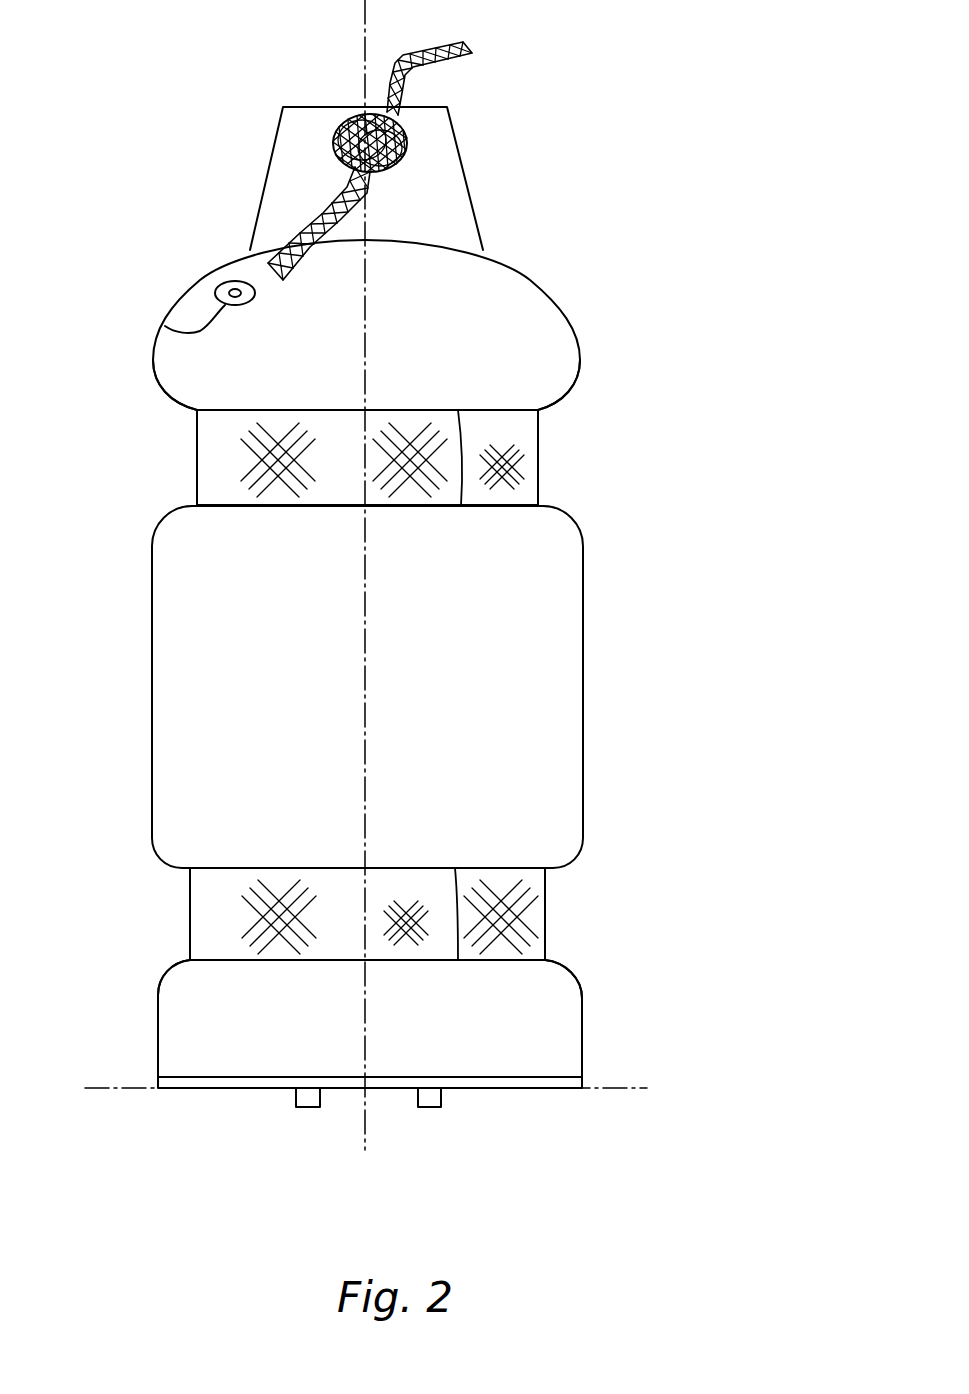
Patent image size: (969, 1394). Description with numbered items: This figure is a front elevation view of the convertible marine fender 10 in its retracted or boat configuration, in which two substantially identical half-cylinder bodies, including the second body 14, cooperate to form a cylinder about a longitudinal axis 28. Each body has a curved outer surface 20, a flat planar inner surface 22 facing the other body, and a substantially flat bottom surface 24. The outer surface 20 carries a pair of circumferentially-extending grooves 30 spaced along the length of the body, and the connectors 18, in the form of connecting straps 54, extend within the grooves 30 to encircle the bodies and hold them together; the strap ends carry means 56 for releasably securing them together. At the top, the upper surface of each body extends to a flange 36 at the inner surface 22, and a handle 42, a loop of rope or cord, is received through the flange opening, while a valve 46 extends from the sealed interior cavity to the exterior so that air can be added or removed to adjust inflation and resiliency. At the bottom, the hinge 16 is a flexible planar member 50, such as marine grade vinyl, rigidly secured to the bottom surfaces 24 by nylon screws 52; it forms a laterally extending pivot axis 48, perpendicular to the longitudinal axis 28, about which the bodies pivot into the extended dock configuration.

The convertible marine fender 10 is at (716, 676).
The second body 14 is at (173, 682).
The hinge 16 is at (396, 1098).
The connectors 18 is at (507, 403).
The outer surface 20 is at (186, 748).
The inner surface 22 is at (218, 263).
The bottom surface 24 is at (195, 1080).
The longitudinal axis 28 is at (377, 1127).
The grooves 30 is at (188, 403).
The flange 36 is at (298, 107).
The handle 42 is at (457, 62).
The valve 46 is at (170, 320).
The pivot axis 48 is at (637, 1088).
The planar member 50 is at (234, 1089).
The nylon screws 52 is at (306, 1109).
The connecting straps 54 is at (538, 471).
The means for releasably securing 56 is at (468, 431).